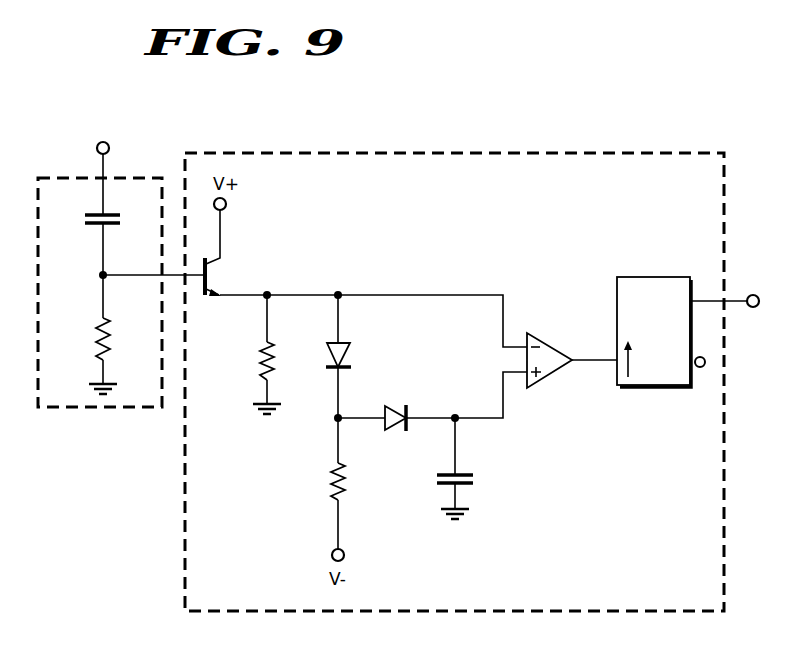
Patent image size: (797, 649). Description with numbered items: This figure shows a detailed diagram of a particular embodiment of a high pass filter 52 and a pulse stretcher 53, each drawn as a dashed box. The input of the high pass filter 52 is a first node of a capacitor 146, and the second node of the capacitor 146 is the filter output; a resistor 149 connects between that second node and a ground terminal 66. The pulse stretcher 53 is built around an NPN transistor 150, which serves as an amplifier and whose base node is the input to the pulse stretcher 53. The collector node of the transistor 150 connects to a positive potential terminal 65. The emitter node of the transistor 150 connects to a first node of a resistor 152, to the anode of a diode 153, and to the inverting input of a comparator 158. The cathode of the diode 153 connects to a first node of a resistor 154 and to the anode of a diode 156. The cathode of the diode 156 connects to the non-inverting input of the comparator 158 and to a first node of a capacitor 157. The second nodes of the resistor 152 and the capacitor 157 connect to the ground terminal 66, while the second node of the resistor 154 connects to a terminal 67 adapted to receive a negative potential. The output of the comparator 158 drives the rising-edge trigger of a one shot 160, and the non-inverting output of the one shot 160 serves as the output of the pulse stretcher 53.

The high pass filter 52 is at (119, 410).
The pulse stretcher 53 is at (697, 152).
The capacitor 146 is at (82, 229).
The resistor 149 is at (112, 353).
The ground terminal 66 is at (77, 388).
The positive potential terminal 65 is at (228, 204).
The NPN transistor 150 is at (220, 282).
The resistor 152 is at (258, 355).
The diode 153 is at (348, 353).
The diode 156 is at (397, 407).
The resistor 154 is at (327, 480).
The terminal 67 is at (345, 555).
The capacitor 157 is at (470, 473).
The comparator 158 is at (548, 343).
The one shot 160 is at (667, 278).